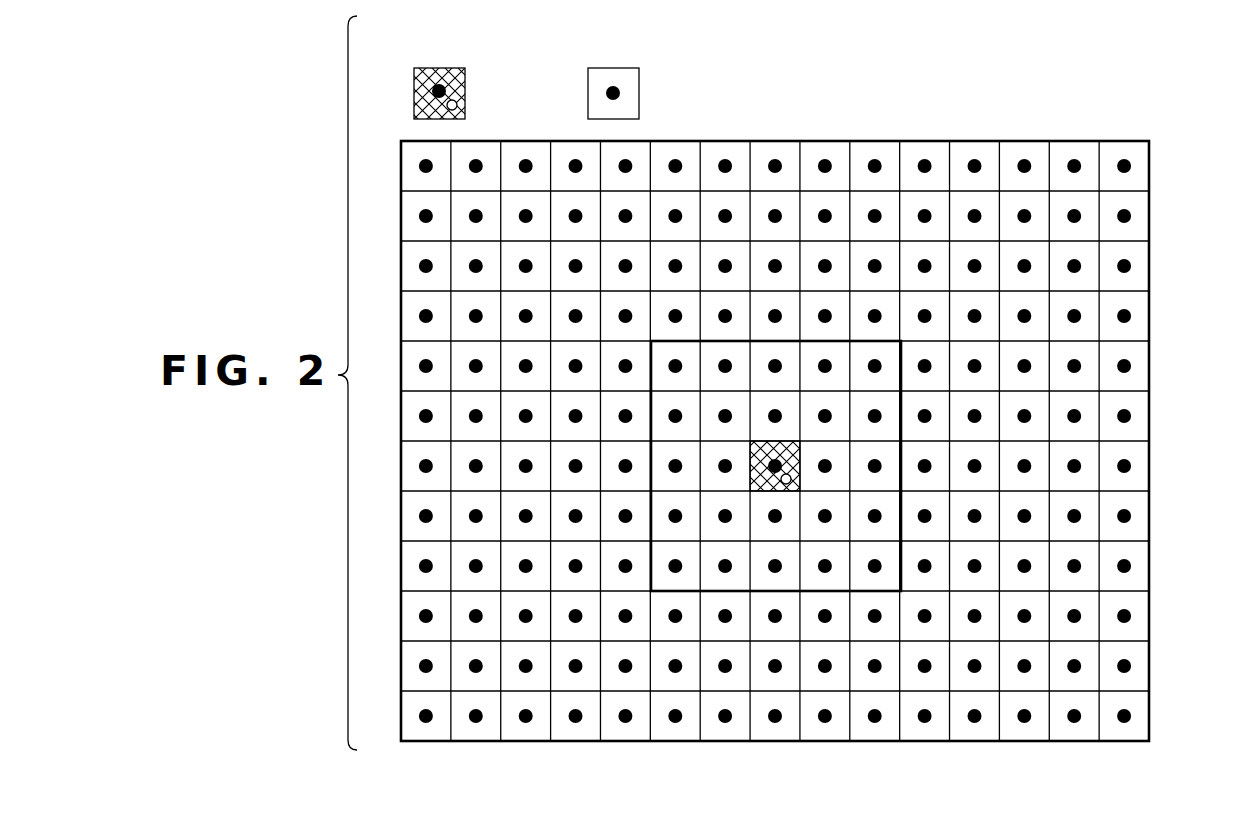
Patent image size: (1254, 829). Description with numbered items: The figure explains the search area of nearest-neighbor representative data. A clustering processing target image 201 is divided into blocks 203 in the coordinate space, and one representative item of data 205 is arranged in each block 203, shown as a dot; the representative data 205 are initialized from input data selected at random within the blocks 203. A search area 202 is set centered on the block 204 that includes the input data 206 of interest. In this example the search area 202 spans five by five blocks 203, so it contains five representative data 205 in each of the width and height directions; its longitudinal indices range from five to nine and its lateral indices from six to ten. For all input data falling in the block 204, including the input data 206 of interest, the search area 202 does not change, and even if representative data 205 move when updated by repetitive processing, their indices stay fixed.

The clustering processing target image 201 is at (1150, 272).
The search area 202 is at (903, 410).
The block 203 is at (639, 71).
The block including input data of interest 204 is at (465, 71).
The representative data 205 is at (441, 68).
The input data of interest 206 is at (457, 105).